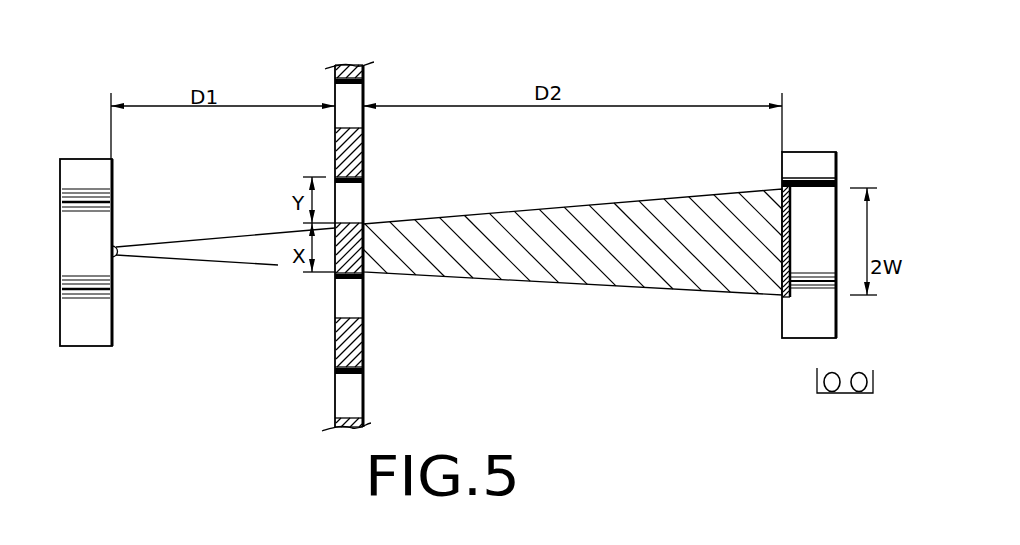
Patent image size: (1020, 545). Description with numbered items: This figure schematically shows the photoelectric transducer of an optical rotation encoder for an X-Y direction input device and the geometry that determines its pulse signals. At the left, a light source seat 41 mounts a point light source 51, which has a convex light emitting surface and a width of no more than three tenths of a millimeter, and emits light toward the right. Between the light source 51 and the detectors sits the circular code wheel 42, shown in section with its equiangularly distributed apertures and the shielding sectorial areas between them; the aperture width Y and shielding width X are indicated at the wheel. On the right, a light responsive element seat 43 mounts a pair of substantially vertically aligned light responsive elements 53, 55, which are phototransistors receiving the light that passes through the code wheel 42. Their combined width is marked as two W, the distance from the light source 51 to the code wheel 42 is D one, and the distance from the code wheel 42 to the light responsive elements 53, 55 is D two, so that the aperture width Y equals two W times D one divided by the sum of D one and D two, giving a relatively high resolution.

The light source seat 41 is at (112, 322).
The light source 51 is at (116, 258).
The circular code wheel 42 is at (363, 352).
The light responsive element 55 is at (777, 294).
The light responsive element seat 43 is at (782, 322).
The light responsive element 53 is at (788, 182).